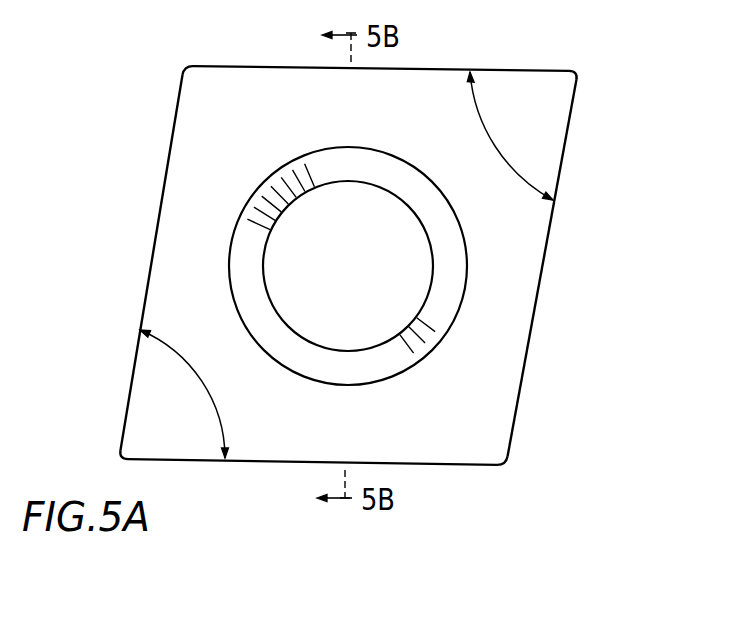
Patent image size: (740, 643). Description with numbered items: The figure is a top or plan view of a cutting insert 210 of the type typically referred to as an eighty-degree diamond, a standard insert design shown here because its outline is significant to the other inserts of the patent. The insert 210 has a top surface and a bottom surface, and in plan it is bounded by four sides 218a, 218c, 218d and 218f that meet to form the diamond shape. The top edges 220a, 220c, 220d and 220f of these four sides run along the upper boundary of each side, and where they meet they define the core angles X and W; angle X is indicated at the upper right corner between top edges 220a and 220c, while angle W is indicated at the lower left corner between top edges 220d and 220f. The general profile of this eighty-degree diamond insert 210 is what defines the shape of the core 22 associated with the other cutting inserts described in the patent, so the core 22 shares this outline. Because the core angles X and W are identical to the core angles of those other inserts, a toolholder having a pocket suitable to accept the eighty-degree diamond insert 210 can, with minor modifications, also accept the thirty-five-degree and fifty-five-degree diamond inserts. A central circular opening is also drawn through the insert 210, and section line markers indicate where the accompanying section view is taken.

The cutting insert 210 is at (141, 49).
The core 22 is at (530, 83).
The side 218a is at (272, 66).
The side 218c is at (538, 312).
The side 218d is at (480, 467).
The side 218f is at (151, 268).
The top edge 220a is at (457, 70).
The top edge 220c is at (554, 212).
The top edge 220d is at (263, 465).
The top edge 220f is at (168, 165).
The core angle W is at (203, 383).
The core angle X is at (492, 145).